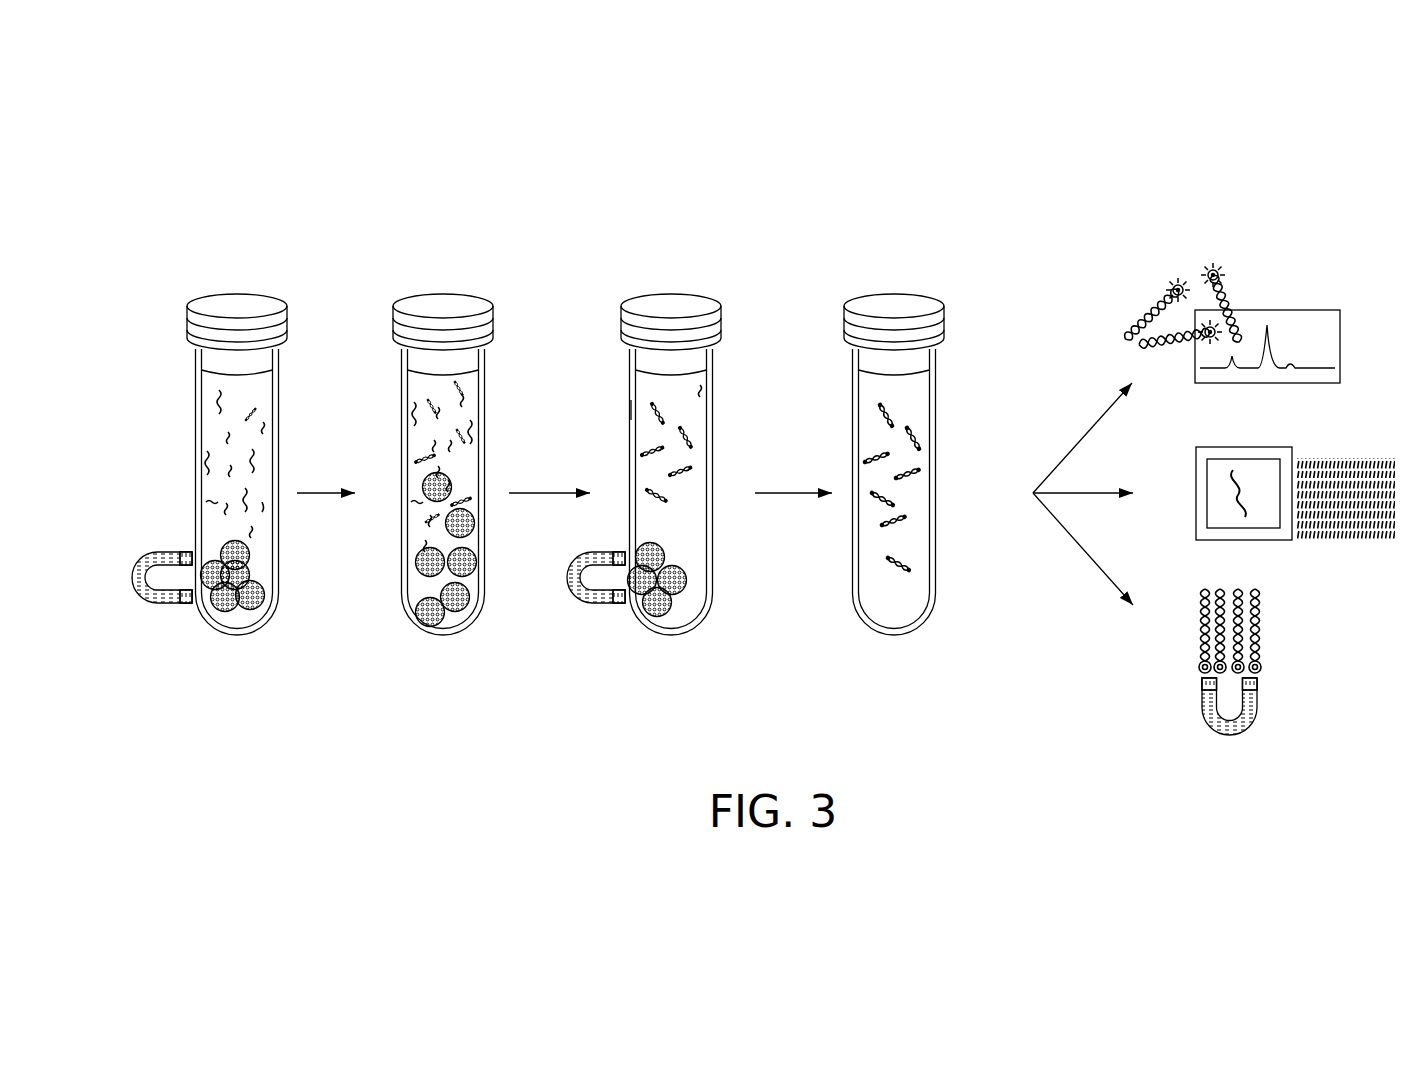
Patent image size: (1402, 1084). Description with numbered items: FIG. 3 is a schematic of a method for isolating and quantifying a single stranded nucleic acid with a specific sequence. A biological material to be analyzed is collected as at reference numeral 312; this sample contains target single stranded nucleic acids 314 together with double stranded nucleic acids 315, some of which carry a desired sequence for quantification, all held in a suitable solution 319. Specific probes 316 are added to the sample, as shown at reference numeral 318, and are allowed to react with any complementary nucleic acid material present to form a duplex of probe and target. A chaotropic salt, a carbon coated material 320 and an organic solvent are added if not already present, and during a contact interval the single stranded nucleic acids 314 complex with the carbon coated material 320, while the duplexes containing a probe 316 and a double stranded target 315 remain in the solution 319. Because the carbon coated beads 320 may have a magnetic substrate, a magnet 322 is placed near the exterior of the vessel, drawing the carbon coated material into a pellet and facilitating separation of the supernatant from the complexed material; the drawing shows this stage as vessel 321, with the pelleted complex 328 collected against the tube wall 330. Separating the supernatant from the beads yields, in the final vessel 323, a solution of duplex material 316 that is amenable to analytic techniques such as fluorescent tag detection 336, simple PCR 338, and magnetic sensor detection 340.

The collected biological material 312 is at (237, 424).
The single stranded nucleic acids 314 is at (222, 399).
The double stranded nucleic acids 315 is at (256, 415).
The specific probes 316 is at (435, 413).
The probe addition step 318 is at (443, 424).
The solution 319 is at (262, 502).
The carbon coated material 320 is at (476, 523).
The sample tube (third stage) 321 is at (671, 423).
The magnet 322 is at (595, 605).
The sample tube (fourth stage) 323 is at (894, 423).
The bead-target complex 328 is at (690, 572).
The tube wall 330 is at (628, 400).
The fluorescent tag detection 336 is at (1082, 437).
The simple PCR 338 is at (1115, 490).
The magnetic sensor detection 340 is at (1082, 555).